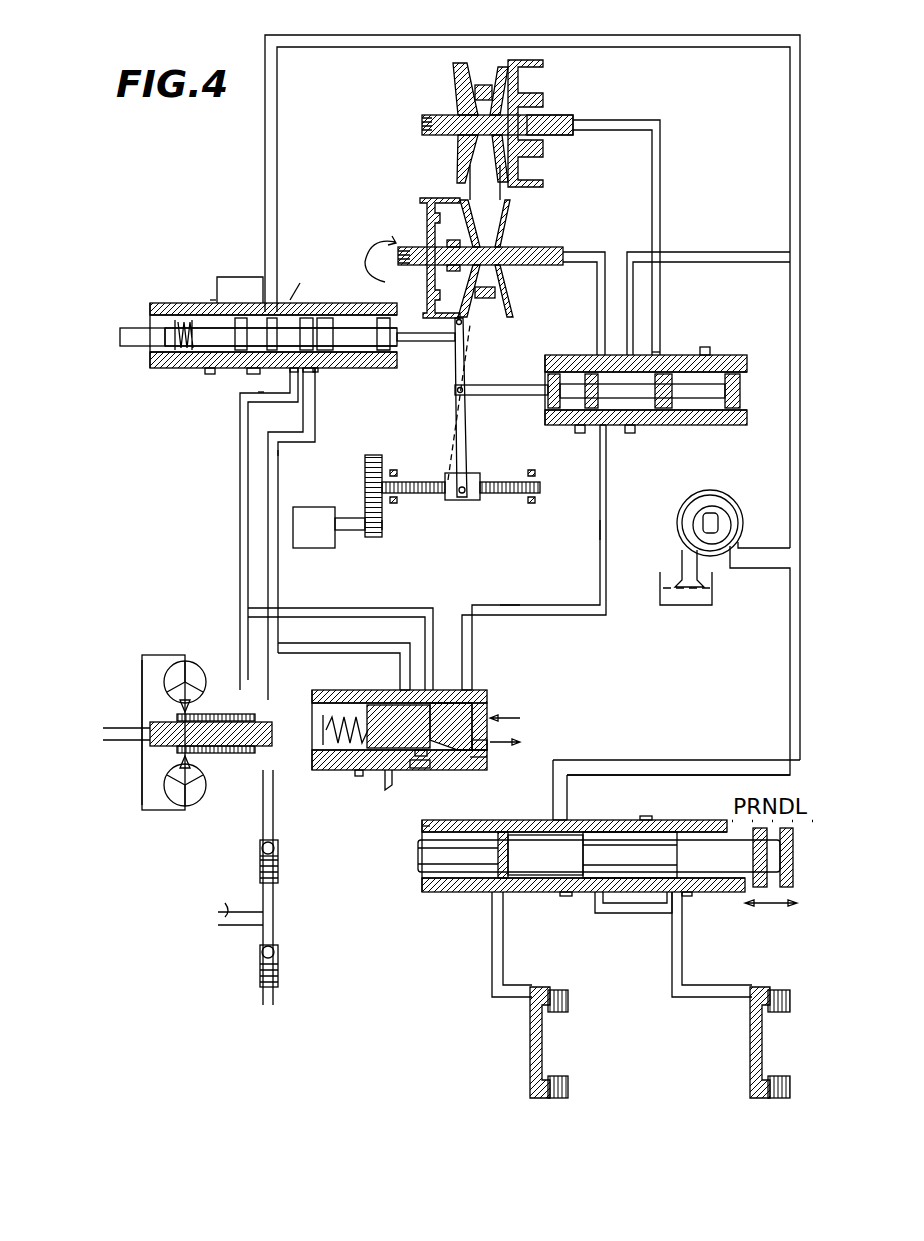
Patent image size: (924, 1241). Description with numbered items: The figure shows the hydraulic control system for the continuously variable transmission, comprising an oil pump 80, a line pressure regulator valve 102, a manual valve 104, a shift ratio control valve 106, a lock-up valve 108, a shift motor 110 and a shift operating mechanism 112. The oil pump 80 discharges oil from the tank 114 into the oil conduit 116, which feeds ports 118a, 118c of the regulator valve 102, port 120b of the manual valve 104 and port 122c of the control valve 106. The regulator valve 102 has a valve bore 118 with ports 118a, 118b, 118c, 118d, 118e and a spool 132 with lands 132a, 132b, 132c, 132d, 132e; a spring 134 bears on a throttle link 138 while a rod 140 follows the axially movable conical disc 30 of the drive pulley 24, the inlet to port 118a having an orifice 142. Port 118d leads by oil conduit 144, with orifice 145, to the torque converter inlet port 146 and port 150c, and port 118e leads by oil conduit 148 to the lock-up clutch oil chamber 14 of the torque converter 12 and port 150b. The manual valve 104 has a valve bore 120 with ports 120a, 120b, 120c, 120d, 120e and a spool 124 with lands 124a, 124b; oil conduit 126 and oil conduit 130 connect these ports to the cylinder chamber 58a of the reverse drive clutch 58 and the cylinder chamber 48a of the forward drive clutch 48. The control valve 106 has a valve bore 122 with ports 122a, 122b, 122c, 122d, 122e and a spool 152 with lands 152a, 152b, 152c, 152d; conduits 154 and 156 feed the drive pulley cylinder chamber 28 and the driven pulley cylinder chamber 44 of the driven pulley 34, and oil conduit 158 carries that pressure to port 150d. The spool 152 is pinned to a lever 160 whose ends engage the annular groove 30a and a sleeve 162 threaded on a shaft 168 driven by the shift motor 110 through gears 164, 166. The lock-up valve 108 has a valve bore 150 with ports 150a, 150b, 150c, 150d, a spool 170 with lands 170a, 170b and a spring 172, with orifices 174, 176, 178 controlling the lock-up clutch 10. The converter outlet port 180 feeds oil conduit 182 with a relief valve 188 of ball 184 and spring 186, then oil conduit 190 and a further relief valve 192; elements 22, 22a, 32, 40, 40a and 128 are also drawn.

The lock-up clutch 10 is at (165, 655).
The torque converter 12 is at (136, 781).
The lock-up clutch oil chamber 14 is at (142, 712).
The drive shaft 22 is at (538, 247).
The rotation direction 22a is at (361, 251).
The drive pulley 24 is at (409, 218).
The drive pulley cylinder chamber 28 is at (442, 276).
The axially movable conical disc 30 is at (510, 312).
The annular groove 30a is at (462, 202).
The belt 32 is at (482, 85).
The driven pulley 34 is at (521, 50).
The driven shaft 40 is at (452, 112).
The hub 40a is at (579, 107).
The driven pulley cylinder chamber 44 is at (540, 84).
The forward drive multiple disc clutch 48 is at (779, 992).
The cylinder chamber 48a is at (755, 990).
The reverse drive multiple disc clutch 58 is at (577, 992).
The cylinder chamber 58a is at (538, 990).
The oil pump 80 is at (677, 535).
The line pressure regulator valve 102 is at (299, 296).
The manual valve 104 is at (700, 774).
The shift ratio control valve 106 is at (605, 448).
The lock-up valve 108 is at (428, 772).
The shift motor 110 is at (304, 499).
The shift operating mechanism 112 is at (476, 464).
The tank 114 is at (712, 590).
The oil conduit 116 is at (790, 490).
The valve bore 118 is at (270, 403).
The port 118a is at (238, 316).
The port 118b is at (243, 275).
The port 118c is at (278, 300).
The port 118d is at (302, 303).
The port 118e is at (332, 300).
The valve bore 120 is at (520, 880).
The port 120a is at (420, 828).
The port 120b is at (565, 820).
The port 120c is at (566, 897).
The port 120d is at (646, 818).
The port 120e is at (686, 896).
The valve bore 122 is at (712, 412).
The port 122a is at (578, 425).
The port 122b is at (598, 430).
The port 122c is at (632, 425).
The port 122d is at (660, 352).
The port 122e is at (703, 350).
The spool 124 is at (425, 872).
The land 124a is at (498, 880).
The land 124b is at (628, 895).
The oil conduit 126 is at (560, 770).
The passage 128 is at (490, 961).
The oil conduit 130 is at (672, 974).
The spool 132 is at (235, 370).
The land 132a is at (208, 372).
The land 132b is at (250, 372).
The land 132c is at (310, 368).
The land 132d is at (300, 368).
The land 132e is at (318, 368).
The spring 134 is at (180, 320).
The throttle link 138 is at (132, 325).
The rod 140 is at (415, 345).
The orifice 142 is at (210, 300).
The oil conduit 144 is at (238, 496).
The orifice 145 is at (262, 395).
The inlet port 146 is at (236, 684).
The oil conduit 148 is at (280, 452).
The valve bore 150 is at (318, 770).
The port 150a is at (368, 700).
The port 150b is at (425, 760).
The port 150c is at (472, 682).
The port 150d is at (495, 758).
The spool 152 is at (575, 383).
The land 152a is at (550, 380).
The land 152b is at (590, 372).
The land 152c is at (662, 410).
The land 152d is at (732, 372).
The oil conduit 154 is at (604, 252).
The oil conduit 156 is at (662, 200).
The oil conduit 158 is at (605, 530).
The lever 160 is at (455, 330).
The sleeve 162 is at (470, 500).
The gear 164 is at (383, 528).
The gear 166 is at (370, 460).
The shaft 168 is at (415, 480).
The spool 170 is at (398, 688).
The land 170a is at (360, 776).
The land 170b is at (475, 762).
The spring 172 is at (318, 706).
The orifice 174 is at (398, 608).
The orifice 176 is at (505, 605).
The orifice 178 is at (394, 778).
The torque converter outlet port 180 is at (238, 754).
The oil conduit 182 is at (274, 820).
The ball 184 is at (280, 850).
The spring 186 is at (280, 870).
The relief valve 188 is at (250, 863).
The oil conduit 190 is at (228, 913).
The relief valve 192 is at (286, 975).